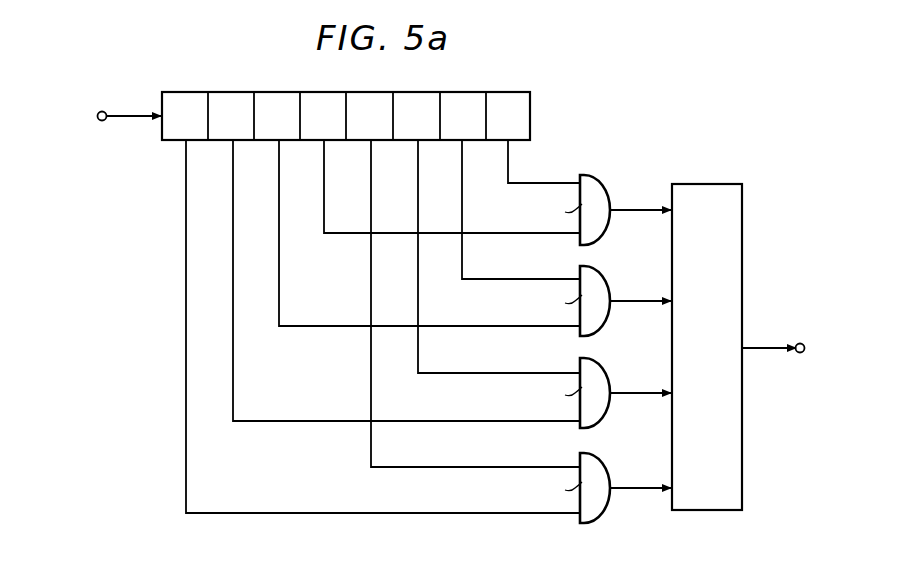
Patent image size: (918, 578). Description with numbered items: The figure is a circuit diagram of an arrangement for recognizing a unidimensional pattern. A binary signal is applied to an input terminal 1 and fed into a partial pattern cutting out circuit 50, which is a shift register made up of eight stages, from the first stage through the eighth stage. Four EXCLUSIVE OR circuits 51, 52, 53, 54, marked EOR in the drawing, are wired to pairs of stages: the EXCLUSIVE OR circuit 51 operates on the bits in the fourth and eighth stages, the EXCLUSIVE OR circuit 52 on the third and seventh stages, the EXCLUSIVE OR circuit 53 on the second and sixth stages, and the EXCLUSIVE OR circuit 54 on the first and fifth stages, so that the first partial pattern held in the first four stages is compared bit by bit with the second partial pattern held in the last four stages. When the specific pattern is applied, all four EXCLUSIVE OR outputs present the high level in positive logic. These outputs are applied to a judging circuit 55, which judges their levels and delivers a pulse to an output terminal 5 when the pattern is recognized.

The input terminal 1 is at (102, 121).
The output terminal 5 is at (800, 353).
The partial pattern cutting out circuit 50 is at (532, 114).
The EXCLUSIVE OR circuit 51 is at (616, 172).
The EXCLUSIVE OR circuit 52 is at (616, 263).
The EXCLUSIVE OR circuit 53 is at (616, 355).
The EXCLUSIVE OR circuit 54 is at (600, 462).
The judging circuit 55 is at (712, 183).